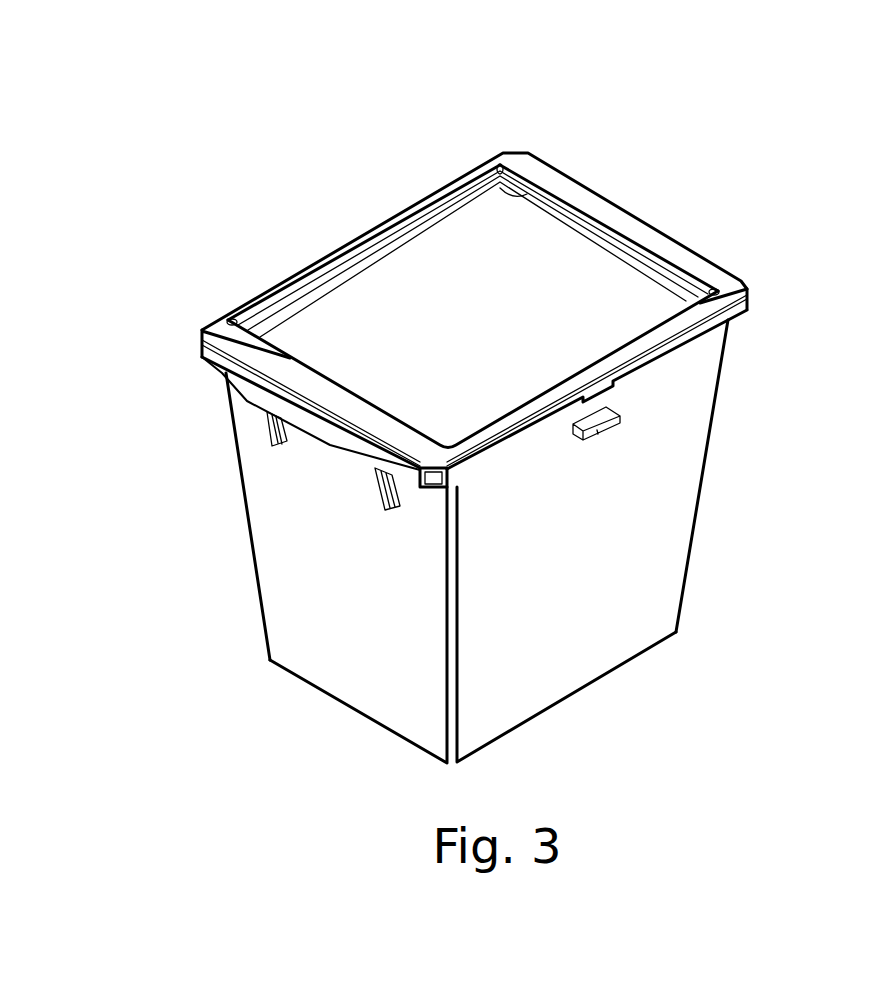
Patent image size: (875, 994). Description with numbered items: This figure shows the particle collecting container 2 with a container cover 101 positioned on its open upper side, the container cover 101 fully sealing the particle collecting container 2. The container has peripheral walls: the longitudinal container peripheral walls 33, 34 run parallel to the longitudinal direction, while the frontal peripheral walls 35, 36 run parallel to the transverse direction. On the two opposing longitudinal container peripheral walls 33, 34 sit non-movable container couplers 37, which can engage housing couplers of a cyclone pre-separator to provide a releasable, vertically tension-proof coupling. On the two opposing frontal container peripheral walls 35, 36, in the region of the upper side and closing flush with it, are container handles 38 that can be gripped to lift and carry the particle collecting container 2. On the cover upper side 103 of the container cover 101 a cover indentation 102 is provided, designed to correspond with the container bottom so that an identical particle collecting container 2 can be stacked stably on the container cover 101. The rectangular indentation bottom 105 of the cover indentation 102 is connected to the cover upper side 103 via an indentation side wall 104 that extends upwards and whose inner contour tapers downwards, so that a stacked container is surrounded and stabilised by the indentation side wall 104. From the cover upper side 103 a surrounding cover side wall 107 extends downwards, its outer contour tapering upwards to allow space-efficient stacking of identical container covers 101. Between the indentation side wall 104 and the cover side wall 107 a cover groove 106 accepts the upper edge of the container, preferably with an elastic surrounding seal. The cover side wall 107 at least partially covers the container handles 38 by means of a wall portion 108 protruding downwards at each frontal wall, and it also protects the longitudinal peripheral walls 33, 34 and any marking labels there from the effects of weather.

The particle collecting container 2 is at (196, 427).
The longitudinal container peripheral wall 33 is at (578, 642).
The longitudinal container peripheral wall 34 is at (233, 493).
The frontal container peripheral wall 35 is at (327, 642).
The frontal container peripheral wall 36 is at (703, 528).
The container coupler 37 is at (597, 440).
The container handle 38 is at (391, 510).
The container cover 101 is at (607, 180).
The cover indentation 102 is at (362, 286).
The cover upper side 103 is at (722, 280).
The indentation side wall 104 is at (494, 170).
The indentation bottom 105 is at (452, 268).
The cover groove 106 is at (650, 375).
The cover side wall 107 is at (723, 320).
The wall portion 108 is at (327, 435).